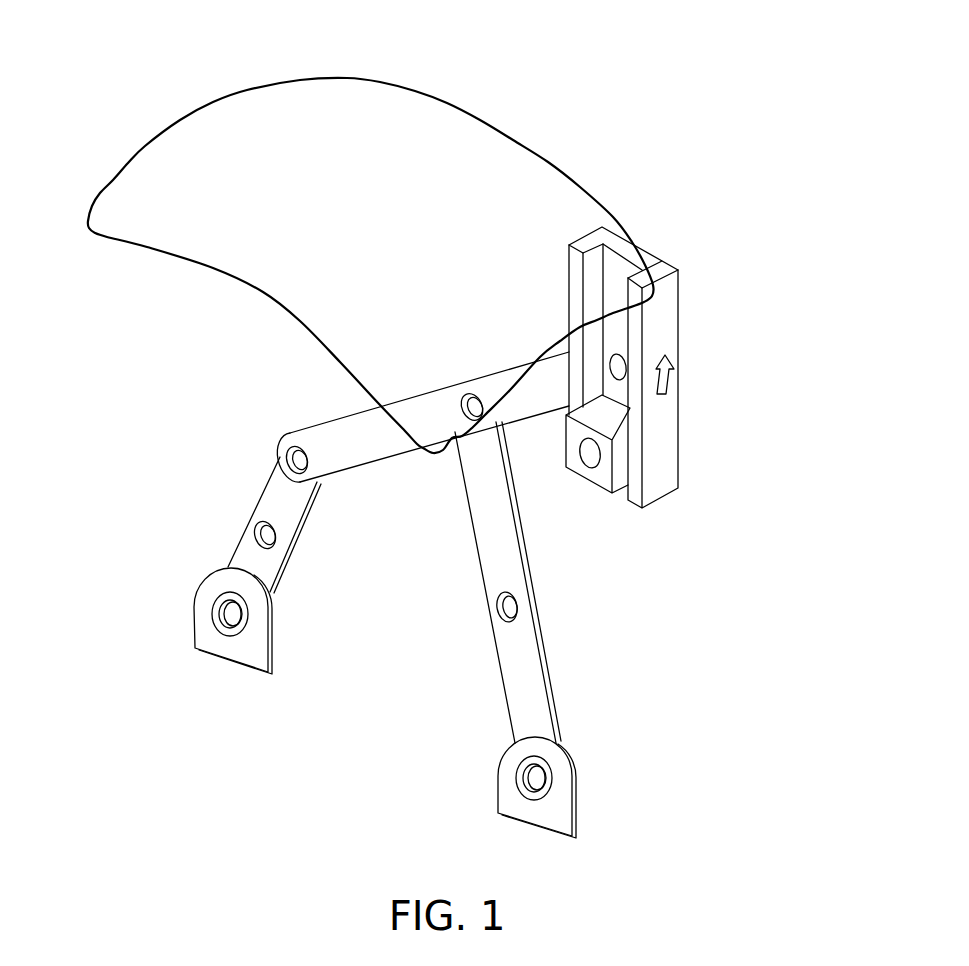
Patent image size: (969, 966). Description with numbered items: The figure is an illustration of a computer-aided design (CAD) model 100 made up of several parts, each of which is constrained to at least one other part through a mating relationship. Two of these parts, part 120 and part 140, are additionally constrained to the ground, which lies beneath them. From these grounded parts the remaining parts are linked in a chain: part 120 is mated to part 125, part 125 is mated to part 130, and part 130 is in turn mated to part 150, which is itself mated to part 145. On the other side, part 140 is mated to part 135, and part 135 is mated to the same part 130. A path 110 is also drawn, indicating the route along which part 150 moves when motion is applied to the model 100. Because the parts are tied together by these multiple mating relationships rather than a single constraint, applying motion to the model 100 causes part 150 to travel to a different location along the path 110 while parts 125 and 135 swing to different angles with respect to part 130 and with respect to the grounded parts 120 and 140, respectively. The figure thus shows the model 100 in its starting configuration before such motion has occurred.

The computer-aided design (CAD) model 100 is at (717, 147).
The path 110 is at (295, 82).
The part 120 is at (207, 612).
The part 125 is at (247, 560).
The part 130 is at (370, 445).
The part 135 is at (525, 691).
The part 140 is at (573, 802).
The part 145 is at (593, 477).
The part 150 is at (670, 424).